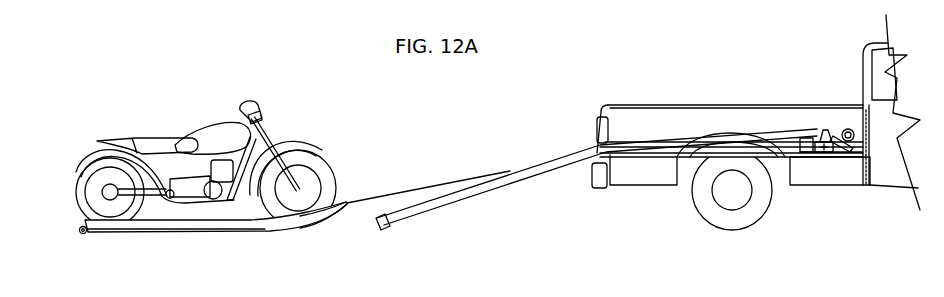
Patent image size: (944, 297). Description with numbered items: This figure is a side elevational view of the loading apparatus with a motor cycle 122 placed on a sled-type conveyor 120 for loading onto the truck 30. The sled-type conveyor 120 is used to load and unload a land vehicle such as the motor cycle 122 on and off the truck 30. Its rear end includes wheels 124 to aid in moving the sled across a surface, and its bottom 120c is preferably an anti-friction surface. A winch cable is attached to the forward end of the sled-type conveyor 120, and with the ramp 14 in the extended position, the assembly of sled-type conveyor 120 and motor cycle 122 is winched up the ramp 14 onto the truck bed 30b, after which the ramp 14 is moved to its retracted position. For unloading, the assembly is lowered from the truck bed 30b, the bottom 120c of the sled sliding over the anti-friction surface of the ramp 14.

The motor cycle 122 is at (223, 120).
The sled-type conveyor 120 is at (187, 222).
The bottom of the sled-type conveyor 120c is at (267, 233).
The wheels 124 is at (81, 233).
The ramp 14 is at (474, 192).
The truck 30 is at (869, 40).
The truck bed 30b is at (647, 157).